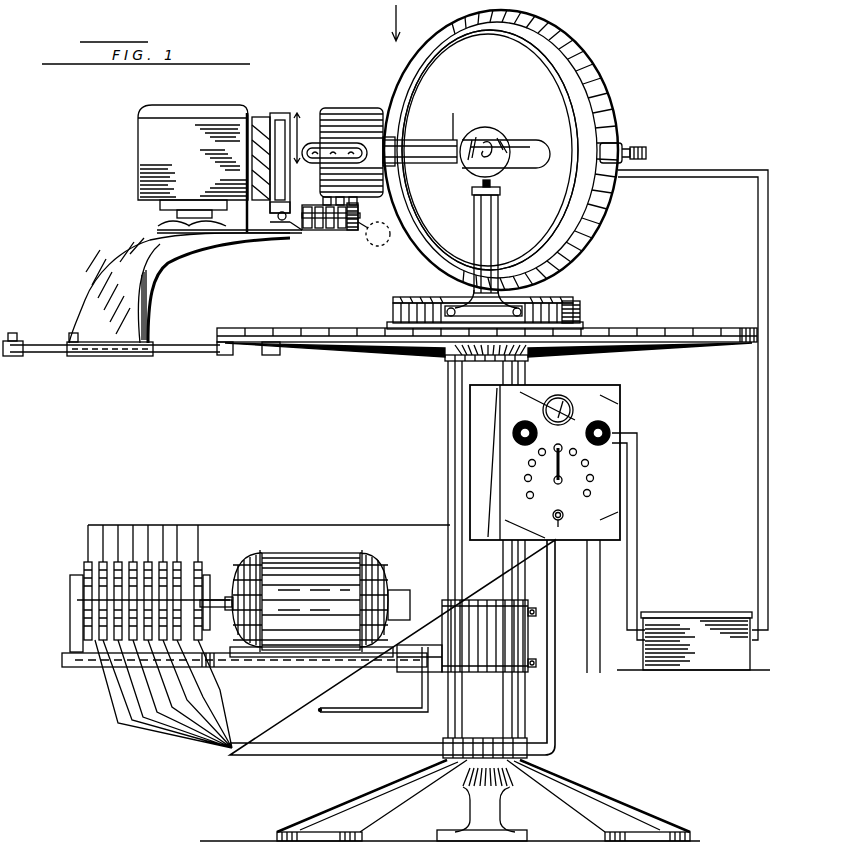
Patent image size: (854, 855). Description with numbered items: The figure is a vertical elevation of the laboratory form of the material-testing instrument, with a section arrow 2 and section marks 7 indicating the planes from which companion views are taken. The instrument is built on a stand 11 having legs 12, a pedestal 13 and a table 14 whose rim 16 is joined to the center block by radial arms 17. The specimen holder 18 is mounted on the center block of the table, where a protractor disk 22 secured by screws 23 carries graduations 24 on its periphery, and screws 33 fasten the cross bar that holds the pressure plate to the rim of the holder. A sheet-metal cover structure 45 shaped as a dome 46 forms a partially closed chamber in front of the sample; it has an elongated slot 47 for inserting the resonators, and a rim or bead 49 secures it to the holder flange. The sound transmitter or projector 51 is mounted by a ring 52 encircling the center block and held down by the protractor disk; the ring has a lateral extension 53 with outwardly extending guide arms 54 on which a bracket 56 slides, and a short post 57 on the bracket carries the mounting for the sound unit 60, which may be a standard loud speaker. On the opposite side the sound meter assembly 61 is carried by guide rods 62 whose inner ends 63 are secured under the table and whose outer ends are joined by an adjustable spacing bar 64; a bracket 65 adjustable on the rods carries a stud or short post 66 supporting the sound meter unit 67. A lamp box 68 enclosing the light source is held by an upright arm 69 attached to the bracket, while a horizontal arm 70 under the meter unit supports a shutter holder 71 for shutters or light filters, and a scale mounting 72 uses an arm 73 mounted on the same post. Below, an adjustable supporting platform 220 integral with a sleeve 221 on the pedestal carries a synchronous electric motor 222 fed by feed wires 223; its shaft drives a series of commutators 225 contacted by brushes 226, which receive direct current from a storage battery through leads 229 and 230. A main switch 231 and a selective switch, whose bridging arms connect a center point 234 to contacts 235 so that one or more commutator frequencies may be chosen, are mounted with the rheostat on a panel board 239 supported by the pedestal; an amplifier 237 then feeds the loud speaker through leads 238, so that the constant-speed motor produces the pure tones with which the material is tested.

The section line 2 is at (401, 23).
The shaft section line 7 is at (380, 139).
The stand 11 is at (439, 404).
The legs 12 is at (388, 779).
The pedestal 13 is at (455, 447).
The table 14 is at (649, 318).
The rim 16 is at (702, 333).
The radial arms 17 is at (609, 344).
The specimen holder 18 is at (618, 110).
The protractor disk 22 is at (547, 300).
The screws 23 is at (440, 300).
The graduations 24 is at (420, 304).
The screws 33 is at (648, 152).
The cover structure 45 is at (548, 98).
The dome 46 is at (512, 94).
The elongated slot 47 is at (536, 148).
The rim or bead 49 is at (572, 129).
The sound transmitter or projector 51 is at (466, 187).
The ring 52 is at (583, 309).
The lateral extension 53 is at (538, 350).
The guide arms 54 is at (446, 348).
The bracket 56 is at (506, 243).
The short post 57 is at (500, 191).
The sound unit 60 is at (491, 140).
The sound meter assembly 61 is at (132, 181).
The guide rods 62 is at (189, 354).
The inner ends 63 is at (259, 356).
The adjustable spacing bar 64 is at (16, 357).
The bracket 65 is at (95, 277).
The stud or short post 66 is at (374, 234).
The sound meter unit 67 is at (353, 104).
The lamp box 68 is at (152, 144).
The upright arm 69 is at (248, 133).
The horizontal arm 70 is at (293, 234).
The shutter holder 71 is at (283, 113).
The scale mounting 72 is at (334, 230).
The arm 73 is at (317, 230).
The adjustable supporting platform 220 is at (293, 666).
The sleeve 221 is at (399, 656).
The electric motor 222 is at (315, 546).
The feed wires 223 is at (386, 696).
The commutators 225 is at (85, 572).
The brushes 226 is at (80, 599).
The leads 229 is at (590, 612).
The leads 230 is at (601, 655).
The main switch 231 is at (565, 518).
The center point 234 is at (558, 484).
The contacts 235 is at (594, 478).
The amplifier 237 is at (696, 609).
The leads 238 is at (758, 256).
The panel board 239 is at (598, 405).